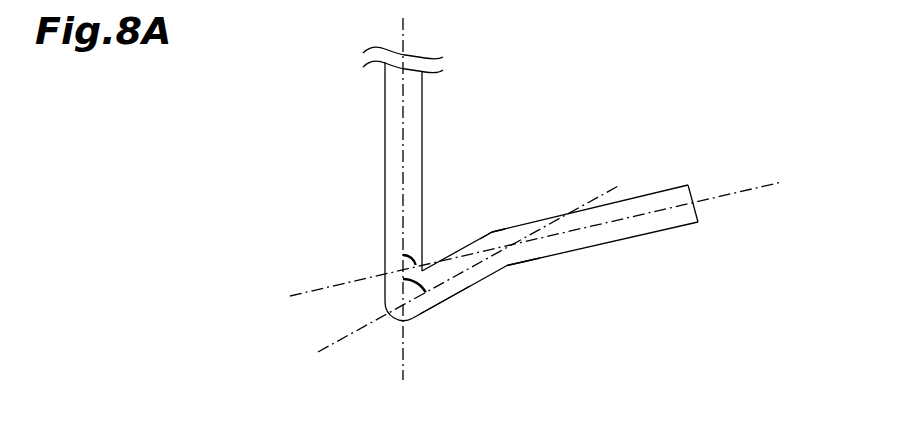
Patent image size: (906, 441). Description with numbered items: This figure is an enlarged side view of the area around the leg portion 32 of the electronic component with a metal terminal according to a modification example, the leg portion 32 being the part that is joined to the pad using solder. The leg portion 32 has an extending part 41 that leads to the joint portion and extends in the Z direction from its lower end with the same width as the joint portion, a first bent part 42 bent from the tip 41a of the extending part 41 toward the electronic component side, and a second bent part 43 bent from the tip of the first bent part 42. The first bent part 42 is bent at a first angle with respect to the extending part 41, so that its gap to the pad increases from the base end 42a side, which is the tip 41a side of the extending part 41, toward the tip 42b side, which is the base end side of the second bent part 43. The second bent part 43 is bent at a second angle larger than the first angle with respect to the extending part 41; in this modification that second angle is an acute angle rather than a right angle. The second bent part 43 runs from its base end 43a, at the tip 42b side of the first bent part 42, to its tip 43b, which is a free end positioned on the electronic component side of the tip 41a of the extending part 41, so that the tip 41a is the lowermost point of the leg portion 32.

The leg portion 32 is at (358, 132).
The extending part 41 is at (385, 188).
The tip of the extending part 41a is at (393, 314).
The first bent part 42 is at (463, 249).
The base end of the first bent part 42a is at (424, 306).
The tip of the first bent part 42b is at (492, 231).
The second bent part 43 is at (630, 199).
The base end of the second bent part 43a is at (512, 227).
The tip of the second bent part 43b is at (686, 187).